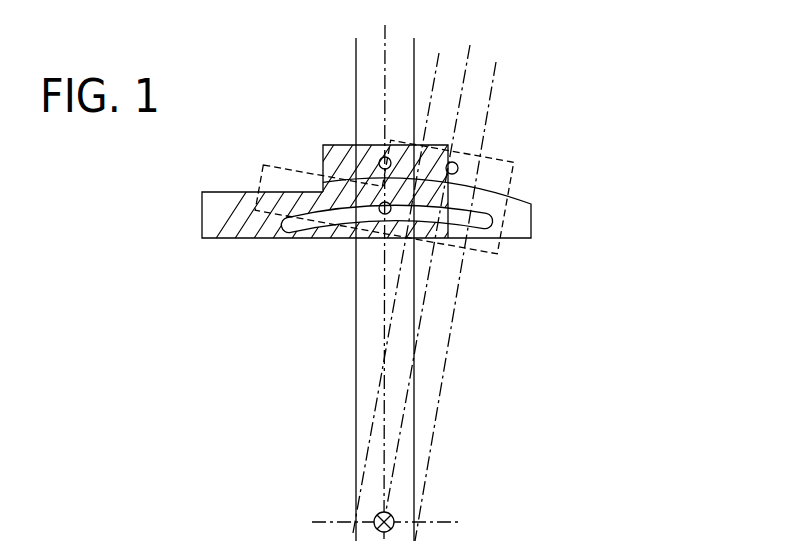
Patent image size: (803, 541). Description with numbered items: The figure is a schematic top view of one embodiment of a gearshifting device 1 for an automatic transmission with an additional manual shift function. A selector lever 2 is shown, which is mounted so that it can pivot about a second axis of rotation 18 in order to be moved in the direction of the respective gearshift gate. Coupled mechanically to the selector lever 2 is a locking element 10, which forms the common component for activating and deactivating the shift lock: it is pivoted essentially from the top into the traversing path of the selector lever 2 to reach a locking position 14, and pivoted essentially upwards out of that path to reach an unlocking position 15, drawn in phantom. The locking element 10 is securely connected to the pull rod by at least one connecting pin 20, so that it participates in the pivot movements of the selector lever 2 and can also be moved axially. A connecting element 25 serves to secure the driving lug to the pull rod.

The gearshifting device 1 is at (469, 359).
The selector lever 2 is at (365, 93).
The locking element 10 is at (349, 217).
The locking position 14 is at (228, 240).
The unlocking position 15 is at (507, 153).
The second axis of rotation 18 is at (325, 519).
The connecting pin 20 is at (337, 145).
The connecting element 25 is at (413, 213).